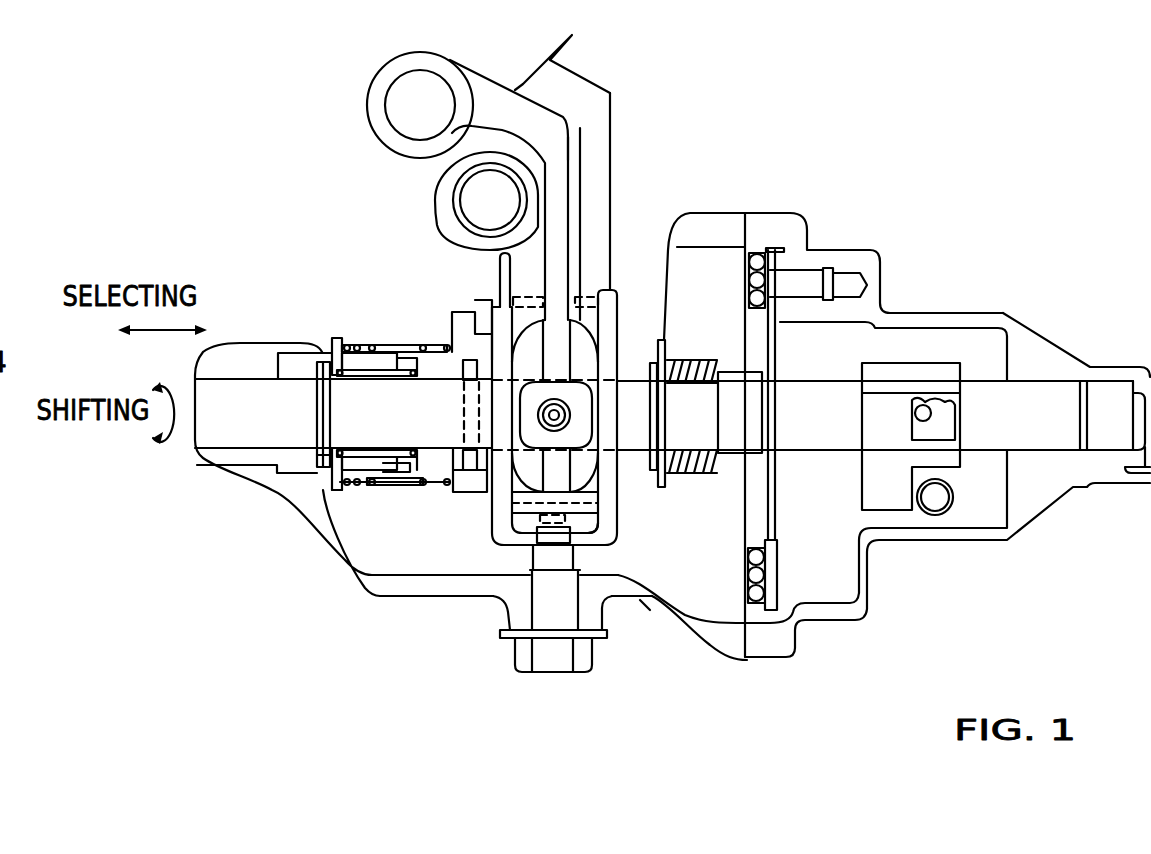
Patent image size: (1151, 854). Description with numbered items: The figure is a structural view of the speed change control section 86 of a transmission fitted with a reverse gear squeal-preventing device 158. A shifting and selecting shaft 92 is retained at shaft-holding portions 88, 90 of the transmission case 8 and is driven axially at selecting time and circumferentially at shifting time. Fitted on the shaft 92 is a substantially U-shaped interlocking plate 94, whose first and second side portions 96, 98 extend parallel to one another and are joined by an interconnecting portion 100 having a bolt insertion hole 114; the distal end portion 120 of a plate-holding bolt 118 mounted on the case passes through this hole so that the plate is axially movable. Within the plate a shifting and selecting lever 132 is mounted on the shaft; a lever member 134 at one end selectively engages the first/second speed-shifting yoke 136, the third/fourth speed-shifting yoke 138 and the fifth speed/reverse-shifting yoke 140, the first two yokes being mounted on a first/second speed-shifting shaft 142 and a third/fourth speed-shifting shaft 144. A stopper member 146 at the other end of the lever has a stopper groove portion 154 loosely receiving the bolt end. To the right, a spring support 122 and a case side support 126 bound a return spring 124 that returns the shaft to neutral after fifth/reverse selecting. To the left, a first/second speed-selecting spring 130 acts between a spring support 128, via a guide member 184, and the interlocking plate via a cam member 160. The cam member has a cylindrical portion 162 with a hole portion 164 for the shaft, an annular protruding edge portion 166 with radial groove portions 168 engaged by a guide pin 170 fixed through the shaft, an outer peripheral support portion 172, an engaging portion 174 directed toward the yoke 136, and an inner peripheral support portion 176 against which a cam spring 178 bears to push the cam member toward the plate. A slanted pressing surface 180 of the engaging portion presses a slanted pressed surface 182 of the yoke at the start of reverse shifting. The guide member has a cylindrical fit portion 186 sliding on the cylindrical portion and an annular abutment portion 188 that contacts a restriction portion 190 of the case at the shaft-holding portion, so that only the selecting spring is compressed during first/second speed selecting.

The transmission case 8 is at (772, 214).
The speed change control section 86 is at (723, 104).
The shaft-holding portion 88 is at (1060, 368).
The shaft-holding portion 90 is at (224, 465).
The shifting and selecting shaft 92 is at (1030, 440).
The interlocking plate 94 is at (623, 535).
The first side portion 96 is at (618, 503).
The second side portion 98 is at (500, 513).
The interconnecting portion 100 is at (603, 577).
The bolt insertion hole 114 is at (650, 610).
The plate-holding bolt 118 is at (548, 500).
The distal end portion 120 is at (603, 633).
The spring support 122 is at (665, 487).
The return spring 124 is at (703, 468).
The case side support 126 is at (767, 447).
The spring support 128 is at (322, 472).
The first/second speed-selecting spring 130 is at (374, 367).
The shifting and selecting lever 132 is at (589, 353).
The lever member 134 is at (560, 335).
The first/second speed-shifting yoke 136 is at (558, 235).
The third/fourth speed-shifting yoke 138 is at (574, 233).
The fifth speed/reverse-shifting yoke 140 is at (590, 258).
The first/second speed-shifting shaft 142 is at (467, 202).
The third/fourth speed-shifting shaft 144 is at (430, 85).
The stopper member 146 is at (560, 520).
The stopper groove portion 154 is at (527, 525).
The reverse gear squeal-preventing device 158 is at (322, 262).
The cam member 160 is at (496, 492).
The cylindrical portion 162 is at (443, 487).
The hole portion 164 is at (418, 375).
The protruding edge portion 166 is at (490, 580).
The groove portions 168 is at (480, 367).
The guide pin 170 is at (577, 452).
The outer peripheral support portion 172 is at (460, 490).
The engaging portion 174 is at (453, 322).
The inner peripheral support portion 176 is at (430, 487).
The cam spring 178 is at (357, 358).
The slanted pressing surface 180 is at (446, 283).
The slanted pressed surface 182 is at (487, 310).
The guide member 184 is at (336, 498).
The fit portion 186 is at (403, 487).
The abutment portion 188 is at (380, 485).
The restriction portion 190 is at (330, 347).